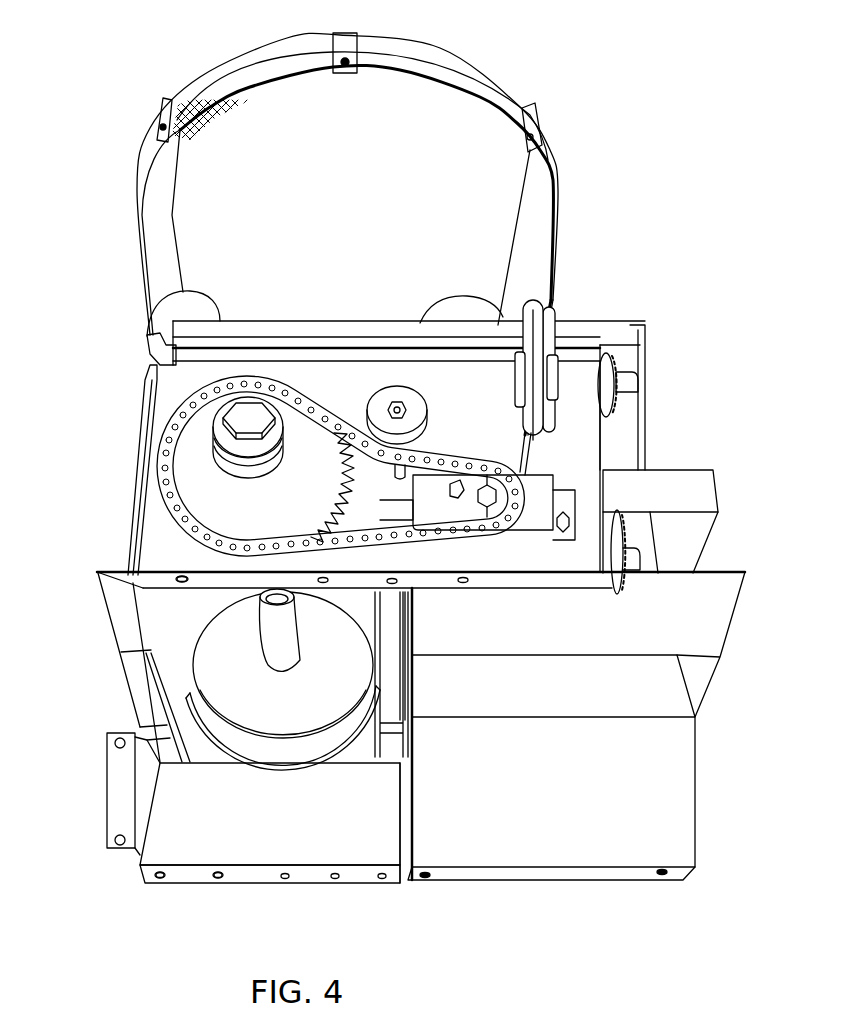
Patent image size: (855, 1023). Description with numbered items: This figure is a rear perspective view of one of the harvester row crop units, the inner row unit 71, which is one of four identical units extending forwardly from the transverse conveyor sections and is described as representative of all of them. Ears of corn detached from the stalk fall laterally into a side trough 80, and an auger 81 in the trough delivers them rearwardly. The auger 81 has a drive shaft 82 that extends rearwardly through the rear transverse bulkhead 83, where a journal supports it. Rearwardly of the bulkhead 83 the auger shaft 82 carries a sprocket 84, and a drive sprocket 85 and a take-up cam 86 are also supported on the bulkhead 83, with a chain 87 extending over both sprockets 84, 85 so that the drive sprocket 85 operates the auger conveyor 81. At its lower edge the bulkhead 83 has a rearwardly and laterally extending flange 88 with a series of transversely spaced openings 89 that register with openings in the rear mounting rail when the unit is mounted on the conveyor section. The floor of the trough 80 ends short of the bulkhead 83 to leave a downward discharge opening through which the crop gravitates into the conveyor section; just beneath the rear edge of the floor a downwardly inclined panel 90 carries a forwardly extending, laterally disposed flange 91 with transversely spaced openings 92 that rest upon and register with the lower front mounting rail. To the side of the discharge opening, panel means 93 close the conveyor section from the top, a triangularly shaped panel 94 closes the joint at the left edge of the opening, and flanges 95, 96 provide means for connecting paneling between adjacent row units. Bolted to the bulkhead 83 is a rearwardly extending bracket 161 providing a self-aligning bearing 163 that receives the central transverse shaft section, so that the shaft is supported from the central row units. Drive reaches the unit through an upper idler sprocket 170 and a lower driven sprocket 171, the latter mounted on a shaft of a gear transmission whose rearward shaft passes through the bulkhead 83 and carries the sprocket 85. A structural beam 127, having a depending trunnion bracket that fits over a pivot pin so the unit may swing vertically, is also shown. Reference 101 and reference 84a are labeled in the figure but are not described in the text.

The row crop unit 71 is at (456, 68).
The hand grip 101 is at (182, 112).
The rear transverse bulkhead 83 is at (347, 388).
The self-aligning bearing 163 is at (515, 363).
The rearwardly extending bracket 161 is at (520, 431).
The upper idler sprocket 170 is at (616, 373).
The sprocket 84 is at (188, 483).
The hub nut 84a is at (270, 467).
The take-up cam 86 is at (428, 419).
The chain 87 is at (381, 534).
The drive sprocket 85 is at (495, 513).
The lower driven sprocket 171 is at (612, 553).
The structural beam 127 is at (690, 539).
The rearwardly and laterally extending flange 88 is at (571, 580).
The transversely spaced openings 89 is at (262, 590).
The flange 95 is at (140, 682).
The auger 81 is at (285, 730).
The side trough 80 is at (354, 750).
The drive shaft 82 is at (278, 601).
The flange 96 is at (107, 797).
The triangularly shaped panel 94 is at (147, 780).
The downwardly inclined panel 90 is at (260, 853).
The forwardly extending laterally disposed flange 91 is at (305, 878).
The transversely spaced openings 92 is at (217, 880).
The panel means 93 is at (580, 783).